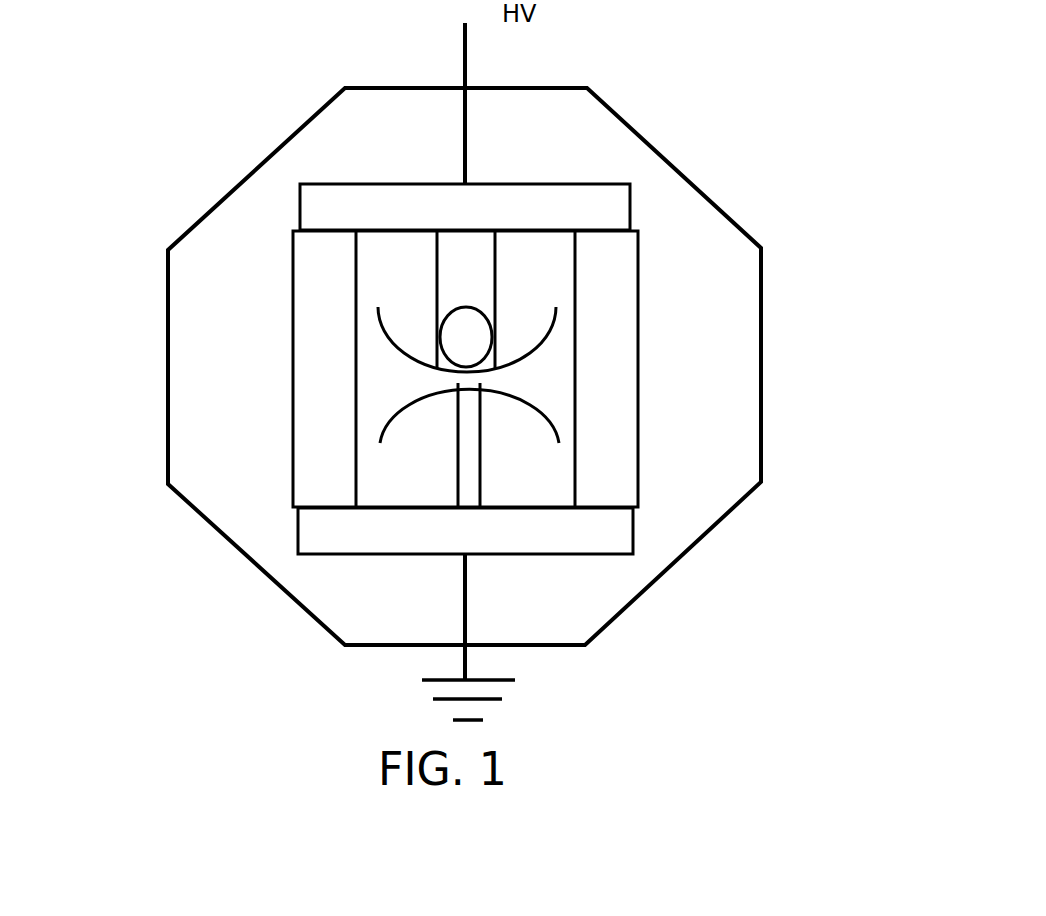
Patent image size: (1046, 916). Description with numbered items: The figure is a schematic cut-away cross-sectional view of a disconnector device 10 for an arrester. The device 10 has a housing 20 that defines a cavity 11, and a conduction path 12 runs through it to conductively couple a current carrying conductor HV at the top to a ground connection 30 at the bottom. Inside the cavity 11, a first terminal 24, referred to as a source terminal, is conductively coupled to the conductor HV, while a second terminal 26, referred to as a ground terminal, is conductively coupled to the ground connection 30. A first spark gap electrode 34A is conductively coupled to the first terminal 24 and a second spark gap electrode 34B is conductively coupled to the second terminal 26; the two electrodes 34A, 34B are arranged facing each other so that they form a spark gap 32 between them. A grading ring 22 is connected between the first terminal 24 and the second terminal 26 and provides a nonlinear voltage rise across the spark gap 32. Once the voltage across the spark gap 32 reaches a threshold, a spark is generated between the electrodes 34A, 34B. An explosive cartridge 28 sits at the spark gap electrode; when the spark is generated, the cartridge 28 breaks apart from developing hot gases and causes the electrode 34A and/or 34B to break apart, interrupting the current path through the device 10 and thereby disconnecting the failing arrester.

The disconnector device 10 is at (574, 59).
The cavity 11 is at (252, 247).
The conduction path 12 is at (466, 134).
The housing 20 is at (265, 158).
The grading ring 22 is at (293, 430).
The first terminal 24 is at (632, 210).
The second terminal 26 is at (598, 553).
The explosive cartridge 28 is at (462, 308).
The ground connection 30 is at (432, 681).
The spark gap 32 is at (497, 371).
The first spark gap electrode 34A is at (447, 285).
The second spark gap electrode 34B is at (460, 482).